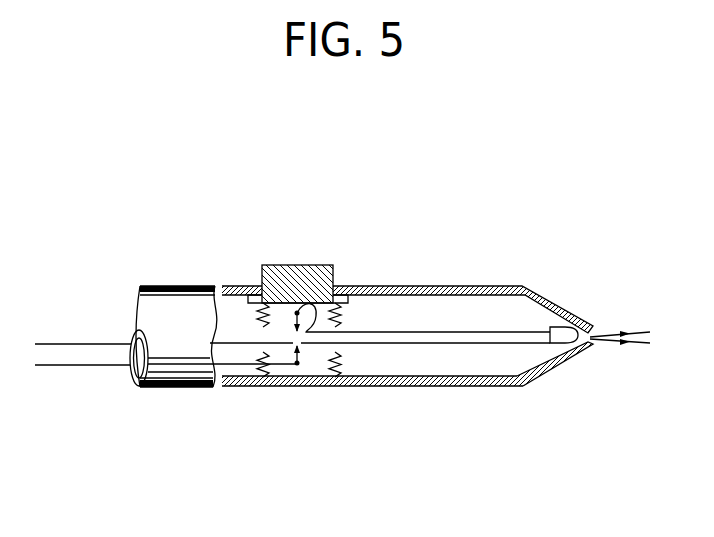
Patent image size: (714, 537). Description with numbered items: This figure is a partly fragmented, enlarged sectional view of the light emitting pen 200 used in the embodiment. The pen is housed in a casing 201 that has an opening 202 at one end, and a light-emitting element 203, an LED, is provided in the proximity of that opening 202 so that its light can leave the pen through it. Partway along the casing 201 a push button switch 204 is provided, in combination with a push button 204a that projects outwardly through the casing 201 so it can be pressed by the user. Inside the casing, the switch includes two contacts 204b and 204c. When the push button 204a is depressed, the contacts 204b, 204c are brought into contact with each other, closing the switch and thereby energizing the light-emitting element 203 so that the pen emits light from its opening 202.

The light emitting pen 200 is at (445, 283).
The casing 201 is at (430, 387).
The opening 202 is at (598, 330).
The light-emitting element 203 is at (570, 349).
The push button switch 204 is at (300, 319).
The push button 204a is at (283, 265).
The contact 204b is at (334, 281).
The contact 204c is at (300, 350).